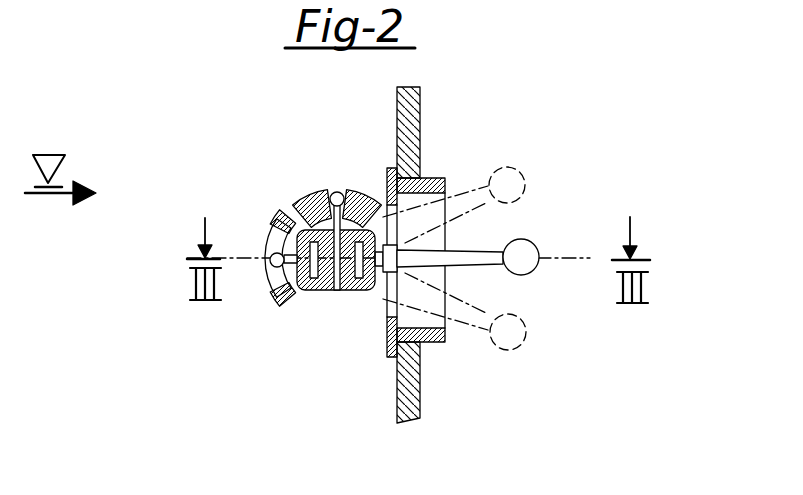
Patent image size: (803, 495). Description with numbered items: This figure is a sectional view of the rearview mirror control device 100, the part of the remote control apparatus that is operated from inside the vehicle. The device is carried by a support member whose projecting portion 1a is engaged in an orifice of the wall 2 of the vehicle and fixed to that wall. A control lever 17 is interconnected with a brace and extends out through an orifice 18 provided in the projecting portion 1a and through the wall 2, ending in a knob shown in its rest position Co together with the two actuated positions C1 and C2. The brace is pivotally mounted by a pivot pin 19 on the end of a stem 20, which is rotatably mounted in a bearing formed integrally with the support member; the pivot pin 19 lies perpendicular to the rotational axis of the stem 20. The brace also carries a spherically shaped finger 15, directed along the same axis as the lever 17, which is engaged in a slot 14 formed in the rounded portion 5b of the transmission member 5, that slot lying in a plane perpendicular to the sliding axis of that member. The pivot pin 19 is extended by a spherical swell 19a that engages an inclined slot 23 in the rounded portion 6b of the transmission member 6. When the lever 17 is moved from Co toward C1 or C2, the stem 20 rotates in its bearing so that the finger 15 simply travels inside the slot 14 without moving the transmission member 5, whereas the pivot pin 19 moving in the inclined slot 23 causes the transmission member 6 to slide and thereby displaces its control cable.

The rearview mirror control device 100 is at (548, 113).
The wall 2 is at (413, 413).
The orifice 18 is at (416, 261).
The projecting portion 1a is at (425, 182).
The lever position C1 is at (476, 202).
The lever position C2 is at (476, 317).
The lever position Co is at (541, 249).
The control lever 17 is at (490, 250).
The transmission member 5 is at (278, 218).
The rounded portion 5b is at (277, 304).
The transmission member 6 is at (324, 179).
The rounded portion 6b is at (367, 190).
The pivot pin 19 is at (333, 242).
The slot 23 is at (323, 192).
The stem 20 is at (348, 291).
The spherical swell 19a is at (337, 190).
The spherically shaped finger 15 is at (278, 271).
The slot 14 is at (281, 239).